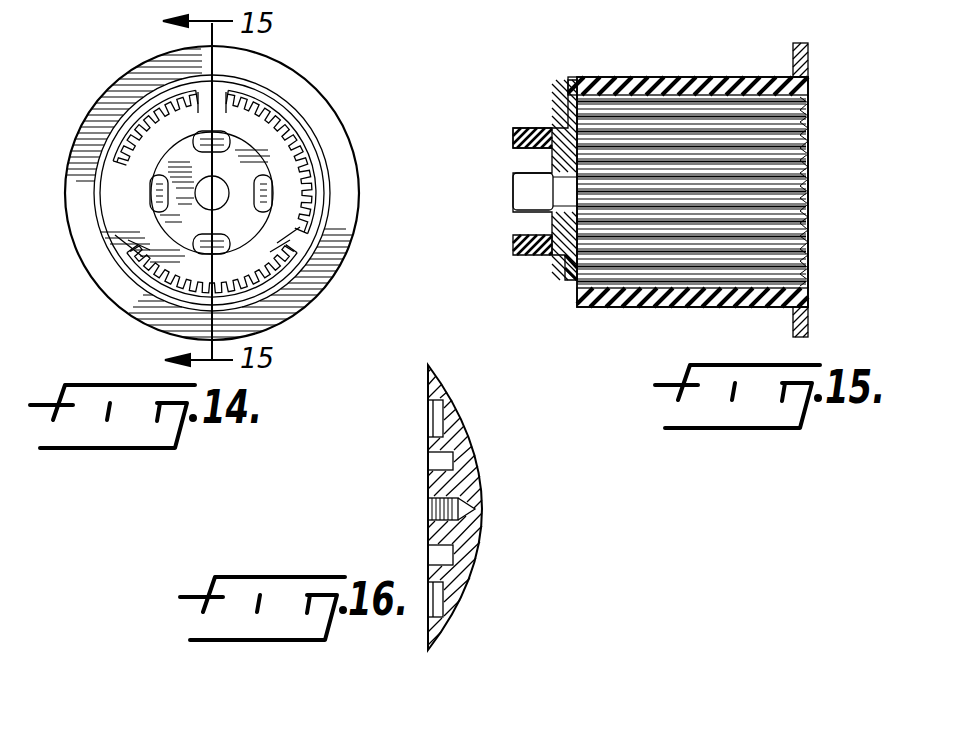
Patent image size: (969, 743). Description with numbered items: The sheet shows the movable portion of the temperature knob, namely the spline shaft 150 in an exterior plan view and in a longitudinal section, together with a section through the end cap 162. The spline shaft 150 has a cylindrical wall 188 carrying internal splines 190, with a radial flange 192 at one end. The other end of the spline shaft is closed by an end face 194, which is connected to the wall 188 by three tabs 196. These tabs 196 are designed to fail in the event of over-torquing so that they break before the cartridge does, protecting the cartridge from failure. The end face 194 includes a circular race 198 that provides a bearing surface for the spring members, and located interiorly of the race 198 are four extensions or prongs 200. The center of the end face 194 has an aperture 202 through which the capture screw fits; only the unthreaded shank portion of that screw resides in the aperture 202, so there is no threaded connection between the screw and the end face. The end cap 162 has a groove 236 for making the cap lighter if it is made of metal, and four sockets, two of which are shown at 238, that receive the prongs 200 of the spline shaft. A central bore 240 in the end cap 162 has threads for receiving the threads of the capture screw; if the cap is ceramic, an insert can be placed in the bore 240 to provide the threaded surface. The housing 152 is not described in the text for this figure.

In FIG. 14, the spline shaft 150 is at (120, 77).
In FIG. 15, the spline shaft 150 is at (650, 77).
In FIG. 15, the housing 152 is at (481, 0).
In FIG. 16, the end cap 162 is at (477, 537).
In FIG. 15, the cylindrical wall 188 is at (717, 52).
In FIG. 14, the internal splines 190 is at (303, 190).
In FIG. 15, the internal splines 190 is at (808, 118).
In FIG. 14, the radial flange 192 is at (113, 302).
In FIG. 15, the radial flange 192 is at (803, 43).
In FIG. 14, the end face 194 is at (310, 287).
In FIG. 15, the end face 194 is at (550, 163).
In FIG. 14, the tabs 196 is at (226, 90).
In FIG. 15, the tabs 196 is at (575, 98).
In FIG. 14, the circular race 198 is at (222, 135).
In FIG. 15, the circular race 198 is at (565, 268).
In FIG. 14, the prongs 200 is at (157, 185).
In FIG. 15, the prongs 200 is at (520, 246).
In FIG. 14, the aperture 202 is at (228, 188).
In FIG. 15, the aperture 202 is at (553, 200).
In FIG. 16, the groove 236 is at (437, 418).
In FIG. 16, the sockets 238 is at (432, 466).
In FIG. 16, the central bore 240 is at (428, 507).